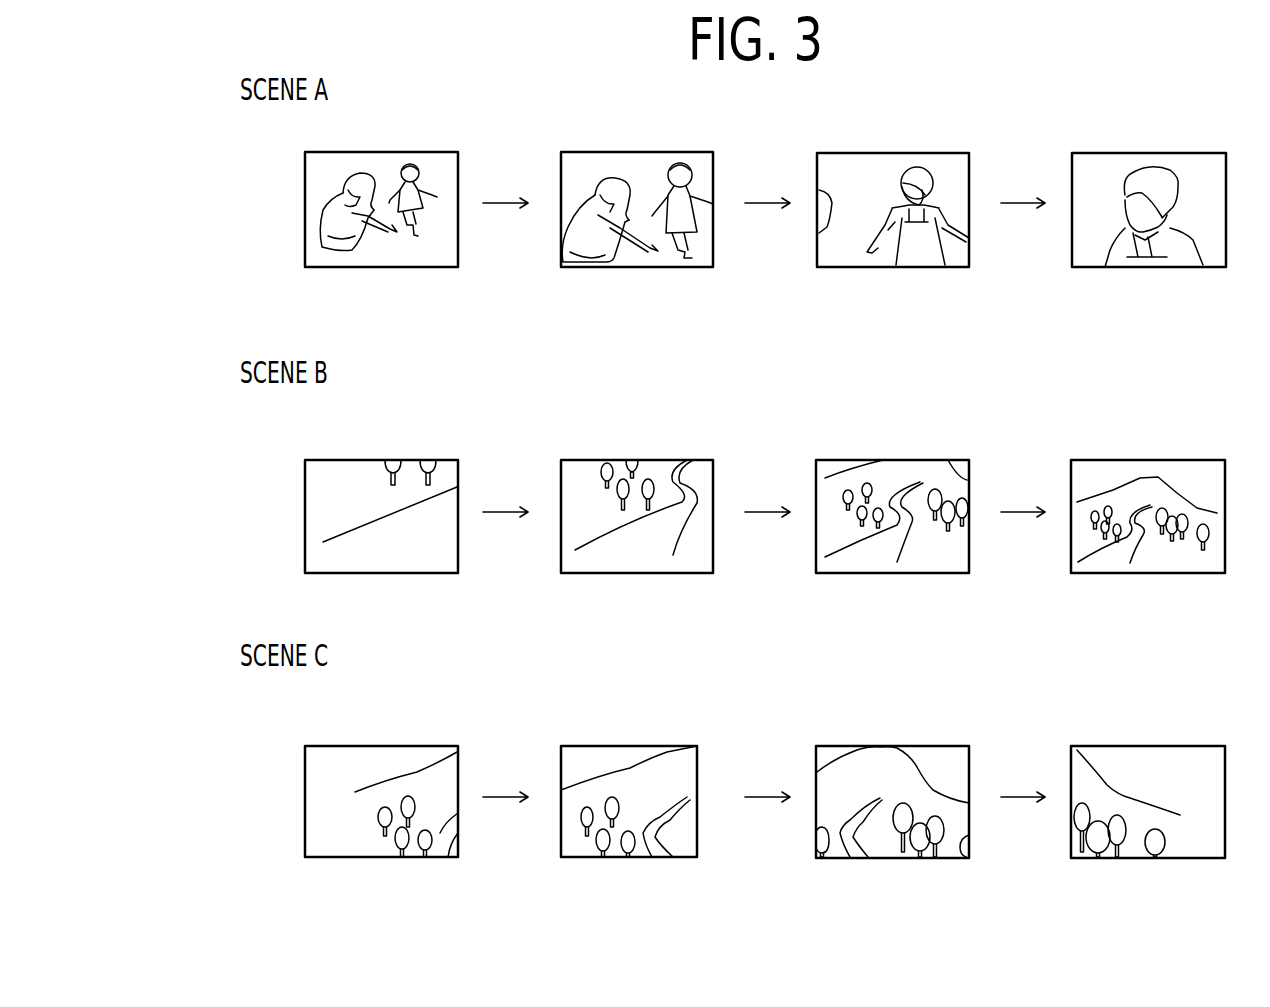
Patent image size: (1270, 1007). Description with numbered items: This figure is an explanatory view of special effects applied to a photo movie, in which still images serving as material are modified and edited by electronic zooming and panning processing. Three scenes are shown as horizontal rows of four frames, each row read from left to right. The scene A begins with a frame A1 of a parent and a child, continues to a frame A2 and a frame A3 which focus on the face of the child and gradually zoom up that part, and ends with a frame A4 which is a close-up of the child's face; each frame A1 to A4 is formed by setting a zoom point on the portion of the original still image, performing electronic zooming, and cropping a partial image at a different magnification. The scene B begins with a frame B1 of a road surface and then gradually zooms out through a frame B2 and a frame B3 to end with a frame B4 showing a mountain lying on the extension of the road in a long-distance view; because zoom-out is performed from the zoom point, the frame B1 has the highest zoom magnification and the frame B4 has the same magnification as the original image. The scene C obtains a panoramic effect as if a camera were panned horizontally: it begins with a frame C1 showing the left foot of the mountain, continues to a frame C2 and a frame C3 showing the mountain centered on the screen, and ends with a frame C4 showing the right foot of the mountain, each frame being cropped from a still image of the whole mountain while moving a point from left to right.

The frame A1 is at (379, 152).
The frame A2 is at (635, 152).
The frame A3 is at (891, 153).
The frame A4 is at (1147, 153).
The frame B1 is at (378, 460).
The frame B2 is at (635, 460).
The frame B3 is at (891, 460).
The frame B4 is at (1147, 460).
The frame C1 is at (378, 746).
The frame C2 is at (635, 746).
The frame C3 is at (891, 746).
The frame C4 is at (1147, 746).